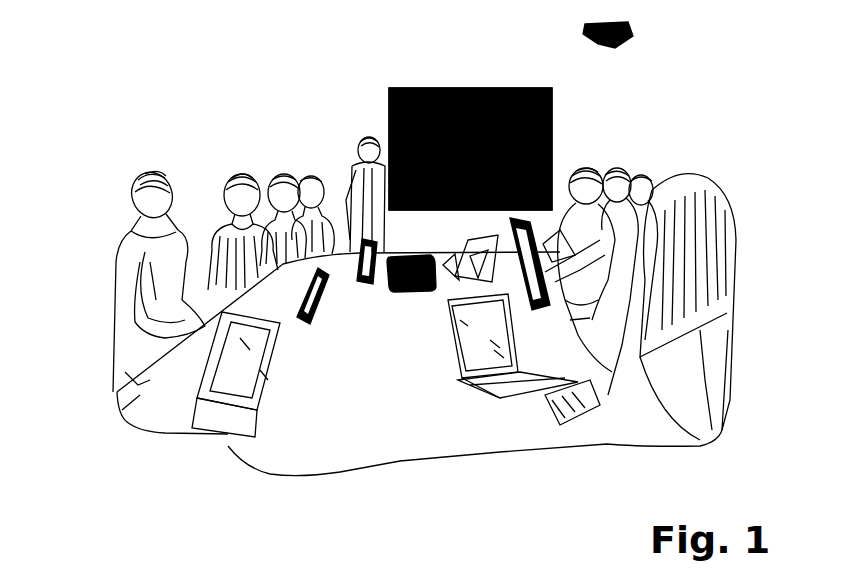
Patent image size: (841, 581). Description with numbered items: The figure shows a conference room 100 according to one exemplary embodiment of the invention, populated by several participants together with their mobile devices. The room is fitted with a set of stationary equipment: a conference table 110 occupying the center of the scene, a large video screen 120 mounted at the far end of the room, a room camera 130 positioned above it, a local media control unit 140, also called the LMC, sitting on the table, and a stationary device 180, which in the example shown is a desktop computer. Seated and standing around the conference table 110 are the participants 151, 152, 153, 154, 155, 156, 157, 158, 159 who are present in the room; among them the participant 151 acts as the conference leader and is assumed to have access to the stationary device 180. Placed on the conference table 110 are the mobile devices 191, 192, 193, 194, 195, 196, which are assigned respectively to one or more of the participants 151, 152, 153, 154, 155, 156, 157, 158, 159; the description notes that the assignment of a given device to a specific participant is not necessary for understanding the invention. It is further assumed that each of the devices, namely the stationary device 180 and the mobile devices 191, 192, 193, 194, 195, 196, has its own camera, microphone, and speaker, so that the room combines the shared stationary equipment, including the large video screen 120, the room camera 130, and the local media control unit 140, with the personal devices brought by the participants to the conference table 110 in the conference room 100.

The conference room 100 is at (120, 84).
The conference table 110 is at (391, 462).
The large video screen 120 is at (466, 82).
The room camera 130 is at (636, 36).
The local media control unit 140 is at (403, 292).
The participant 151 is at (370, 138).
The participant 152 is at (306, 178).
The participant 153 is at (232, 172).
The participant 154 is at (278, 173).
The participant 155 is at (128, 200).
The participant 156 is at (582, 170).
The participant 157 is at (612, 167).
The participant 158 is at (640, 188).
The participant 159 is at (722, 222).
The stationary device 180 is at (463, 250).
The mobile device 191 is at (223, 437).
The mobile device 192 is at (465, 380).
The mobile device 193 is at (307, 324).
The mobile device 194 is at (540, 283).
The mobile device 195 is at (360, 286).
The mobile device 196 is at (560, 226).